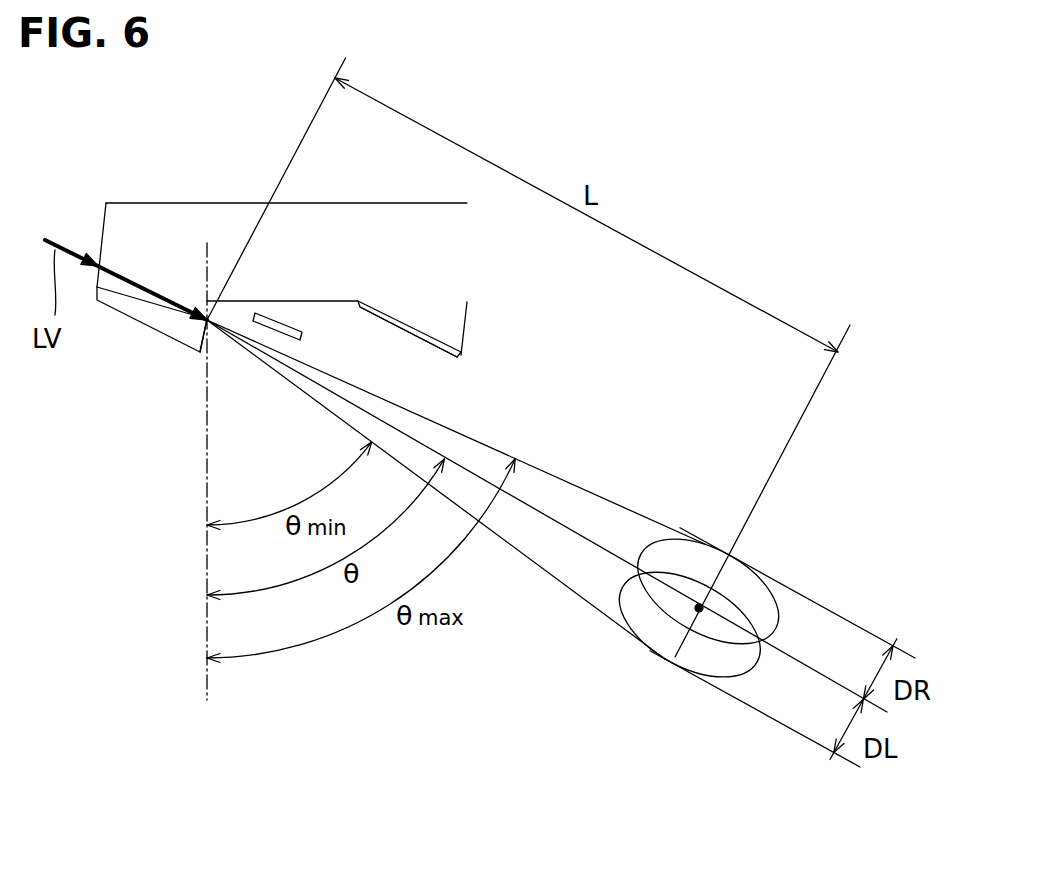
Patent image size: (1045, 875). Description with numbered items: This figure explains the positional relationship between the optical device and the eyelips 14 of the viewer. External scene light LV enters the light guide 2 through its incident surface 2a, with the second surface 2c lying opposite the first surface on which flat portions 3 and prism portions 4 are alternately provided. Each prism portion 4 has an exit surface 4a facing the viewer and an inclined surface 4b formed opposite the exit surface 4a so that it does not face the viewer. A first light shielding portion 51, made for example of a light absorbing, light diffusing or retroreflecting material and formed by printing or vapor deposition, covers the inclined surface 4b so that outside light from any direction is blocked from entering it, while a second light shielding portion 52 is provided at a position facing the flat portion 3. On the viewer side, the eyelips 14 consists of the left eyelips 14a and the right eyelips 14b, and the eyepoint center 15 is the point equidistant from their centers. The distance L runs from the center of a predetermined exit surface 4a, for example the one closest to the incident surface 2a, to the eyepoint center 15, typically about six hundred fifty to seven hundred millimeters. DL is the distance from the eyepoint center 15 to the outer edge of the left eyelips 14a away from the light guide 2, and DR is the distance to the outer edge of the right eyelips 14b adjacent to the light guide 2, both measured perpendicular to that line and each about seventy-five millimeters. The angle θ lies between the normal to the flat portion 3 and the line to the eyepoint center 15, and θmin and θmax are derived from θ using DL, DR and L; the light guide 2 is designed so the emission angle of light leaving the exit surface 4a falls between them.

The light guide 2 is at (256, 204).
The incident surface 2a is at (101, 226).
The second surface 2c is at (247, 201).
The flat portion 3 is at (345, 303).
The prism portion 4 is at (391, 363).
The exit surface 4a is at (467, 318).
The inclined surface 4b is at (438, 356).
The first light shielding portion 51 is at (140, 326).
The second light shielding portion 52 is at (302, 324).
The eyelips 14 is at (716, 672).
The left eyelips 14a is at (689, 668).
The right eyelips 14b is at (778, 622).
The eyepoint center 15 is at (677, 660).